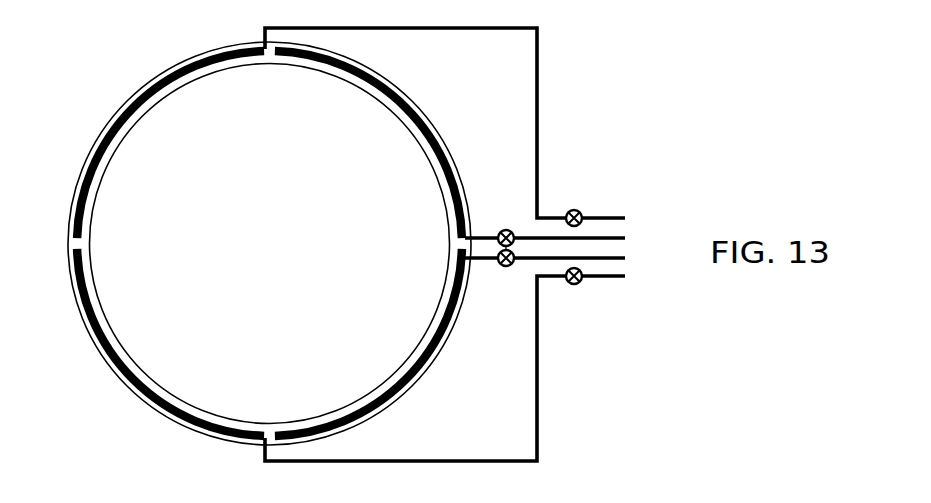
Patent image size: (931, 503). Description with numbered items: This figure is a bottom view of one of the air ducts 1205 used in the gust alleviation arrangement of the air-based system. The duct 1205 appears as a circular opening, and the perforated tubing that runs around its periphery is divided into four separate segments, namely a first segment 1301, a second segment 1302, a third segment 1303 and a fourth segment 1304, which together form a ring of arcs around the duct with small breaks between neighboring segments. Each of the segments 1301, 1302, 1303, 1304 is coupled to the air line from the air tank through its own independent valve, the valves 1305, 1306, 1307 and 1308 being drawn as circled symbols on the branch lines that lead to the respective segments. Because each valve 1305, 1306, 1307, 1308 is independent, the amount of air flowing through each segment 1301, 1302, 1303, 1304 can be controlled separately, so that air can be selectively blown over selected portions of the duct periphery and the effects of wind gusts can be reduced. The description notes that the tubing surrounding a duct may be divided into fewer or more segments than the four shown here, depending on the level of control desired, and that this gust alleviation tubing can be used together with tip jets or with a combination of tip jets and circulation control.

The air duct 1205 is at (103, 180).
The perforated air duct tubing segment 1301 is at (150, 84).
The perforated air duct tubing segment 1302 is at (430, 122).
The perforated air duct tubing segment 1303 is at (443, 362).
The perforated air duct tubing segment 1304 is at (183, 425).
The independent valve 1305 is at (574, 209).
The independent valve 1306 is at (506, 230).
The independent valve 1307 is at (506, 266).
The independent valve 1308 is at (574, 285).